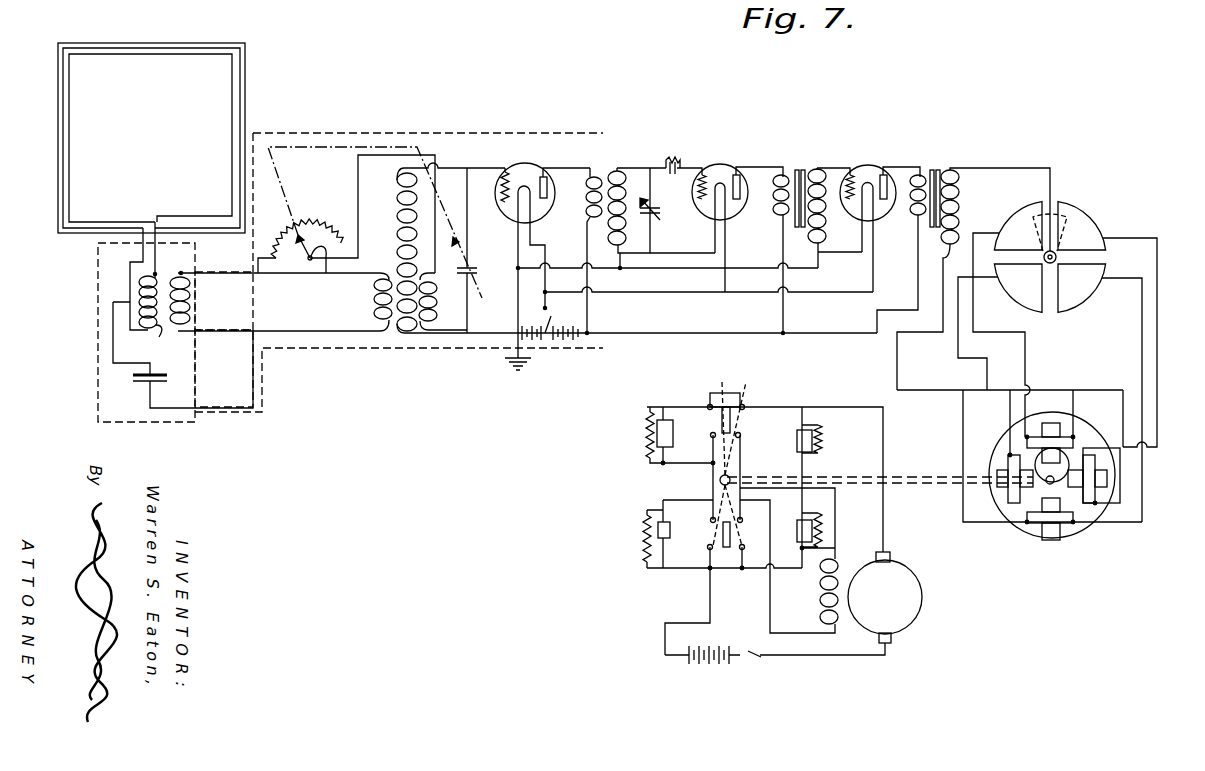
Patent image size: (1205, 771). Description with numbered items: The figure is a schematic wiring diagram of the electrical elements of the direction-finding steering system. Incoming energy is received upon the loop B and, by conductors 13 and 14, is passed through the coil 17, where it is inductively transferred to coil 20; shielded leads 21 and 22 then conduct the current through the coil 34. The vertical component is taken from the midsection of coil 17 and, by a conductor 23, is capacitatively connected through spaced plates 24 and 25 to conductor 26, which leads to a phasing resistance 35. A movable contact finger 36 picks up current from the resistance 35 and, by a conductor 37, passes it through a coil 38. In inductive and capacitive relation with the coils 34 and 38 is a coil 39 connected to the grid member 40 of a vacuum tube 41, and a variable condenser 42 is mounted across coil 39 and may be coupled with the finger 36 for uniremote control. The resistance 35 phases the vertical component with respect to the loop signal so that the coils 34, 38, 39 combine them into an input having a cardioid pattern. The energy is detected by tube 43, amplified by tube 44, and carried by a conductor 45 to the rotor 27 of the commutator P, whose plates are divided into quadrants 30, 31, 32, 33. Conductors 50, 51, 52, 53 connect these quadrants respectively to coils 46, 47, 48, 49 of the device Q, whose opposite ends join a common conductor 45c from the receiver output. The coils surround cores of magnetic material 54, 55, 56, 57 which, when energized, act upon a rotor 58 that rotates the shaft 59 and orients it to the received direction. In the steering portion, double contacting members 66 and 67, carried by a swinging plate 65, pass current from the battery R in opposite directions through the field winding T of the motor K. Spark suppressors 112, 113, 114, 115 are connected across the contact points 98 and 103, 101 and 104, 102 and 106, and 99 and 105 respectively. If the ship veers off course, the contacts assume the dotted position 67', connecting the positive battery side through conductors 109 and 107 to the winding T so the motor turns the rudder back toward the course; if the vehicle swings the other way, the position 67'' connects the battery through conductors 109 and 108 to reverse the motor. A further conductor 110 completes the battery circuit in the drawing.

The loop B is at (247, 96).
The conductor 13 is at (140, 258).
The conductor 14 is at (158, 271).
The coil 17 is at (140, 330).
The coil 20 is at (186, 283).
The shielded lead 21 is at (224, 301).
The shielded lead 22 is at (224, 368).
The conductor 23 is at (113, 340).
The spaced plate 24 is at (157, 378).
The spaced plate 25 is at (160, 384).
The conductor 26 is at (228, 412).
The rotor 27 is at (1086, 214).
The quadrant 30 is at (1083, 306).
The quadrant 31 is at (1099, 230).
The quadrant 32 is at (1010, 223).
The quadrant 33 is at (1020, 312).
The coil 34 is at (384, 333).
The phasing resistance 35 is at (303, 232).
The movable contact finger 36 is at (321, 274).
The conductor 37 is at (357, 177).
The coil 38 is at (438, 316).
The coil 39 is at (403, 333).
The grid member 40 is at (522, 176).
The vacuum tube 41 is at (567, 175).
The variable condenser 42 is at (476, 270).
The tube 43 is at (737, 170).
The tube 44 is at (875, 170).
The conductor 45 is at (972, 168).
The common conductor 45c is at (903, 386).
The coil 46 is at (1068, 527).
The coil 47 is at (1110, 470).
The coil 48 is at (1033, 436).
The coil 49 is at (1007, 507).
The conductor 50 is at (1143, 385).
The conductor 51 is at (1157, 262).
The conductor 52 is at (1025, 342).
The conductor 53 is at (957, 345).
The core of magnetic material 54 is at (1048, 540).
The core of magnetic material 55 is at (1110, 483).
The core of magnetic material 56 is at (1060, 424).
The core of magnetic material 57 is at (1000, 490).
The rotor 58 is at (1068, 443).
The shaft 59 is at (930, 484).
The plate 65 is at (730, 470).
The double contacting member 66 is at (723, 534).
The double contacting member 67 is at (708, 420).
The dotted-line position of contact members 67' is at (750, 419).
The dotted-line position of contact members 67'' is at (719, 419).
The contact point 98 is at (742, 434).
The contact point 99 is at (743, 520).
The contact point 101 is at (710, 437).
The contact point 102 is at (710, 520).
The contact point 103 is at (745, 405).
The contact point 104 is at (708, 405).
The contact point 105 is at (744, 548).
The contact point 106 is at (707, 547).
The conductor 107 is at (770, 600).
The conductor 108 is at (720, 481).
The conductor 109 is at (800, 407).
The conductor 110 is at (728, 570).
The spark suppressor 112 is at (822, 447).
The spark suppressor 113 is at (670, 436).
The spark suppressor 114 is at (664, 534).
The spark suppressor 115 is at (822, 532).
The motor K is at (921, 611).
The commutator P is at (1053, 250).
The device Q is at (955, 475).
The battery R is at (706, 667).
The field winding T is at (822, 586).